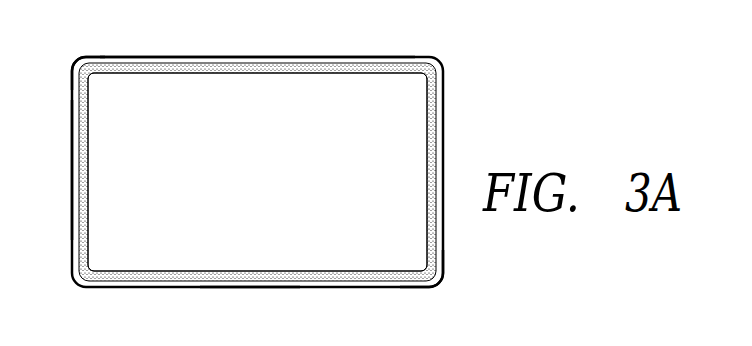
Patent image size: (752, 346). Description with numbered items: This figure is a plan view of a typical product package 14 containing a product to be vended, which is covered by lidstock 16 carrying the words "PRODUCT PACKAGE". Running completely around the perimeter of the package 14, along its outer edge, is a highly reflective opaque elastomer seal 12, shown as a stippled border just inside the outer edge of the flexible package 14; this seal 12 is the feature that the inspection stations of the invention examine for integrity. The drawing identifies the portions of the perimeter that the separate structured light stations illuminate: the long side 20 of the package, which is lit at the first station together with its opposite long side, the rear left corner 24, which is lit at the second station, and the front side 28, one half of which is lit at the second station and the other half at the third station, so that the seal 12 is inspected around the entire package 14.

The seal 12 is at (263, 70).
The package 14 is at (357, 57).
The lidstock 16 is at (145, 87).
The long side 20 is at (200, 57).
The rear left corner 24 is at (438, 276).
The front side 28 is at (72, 135).